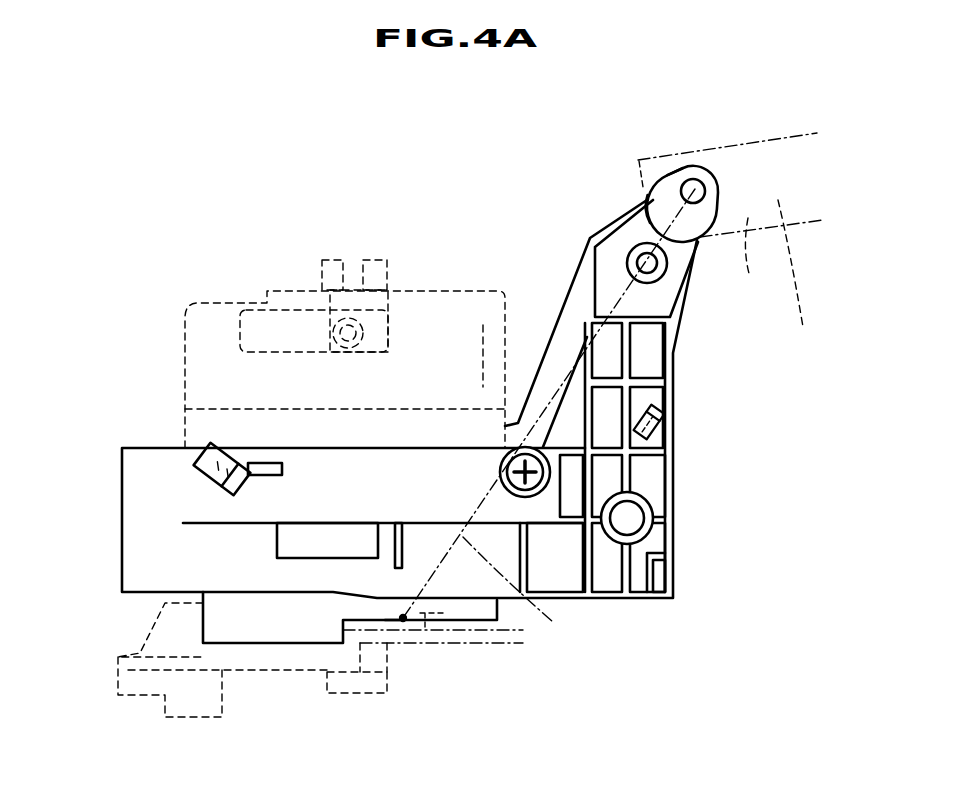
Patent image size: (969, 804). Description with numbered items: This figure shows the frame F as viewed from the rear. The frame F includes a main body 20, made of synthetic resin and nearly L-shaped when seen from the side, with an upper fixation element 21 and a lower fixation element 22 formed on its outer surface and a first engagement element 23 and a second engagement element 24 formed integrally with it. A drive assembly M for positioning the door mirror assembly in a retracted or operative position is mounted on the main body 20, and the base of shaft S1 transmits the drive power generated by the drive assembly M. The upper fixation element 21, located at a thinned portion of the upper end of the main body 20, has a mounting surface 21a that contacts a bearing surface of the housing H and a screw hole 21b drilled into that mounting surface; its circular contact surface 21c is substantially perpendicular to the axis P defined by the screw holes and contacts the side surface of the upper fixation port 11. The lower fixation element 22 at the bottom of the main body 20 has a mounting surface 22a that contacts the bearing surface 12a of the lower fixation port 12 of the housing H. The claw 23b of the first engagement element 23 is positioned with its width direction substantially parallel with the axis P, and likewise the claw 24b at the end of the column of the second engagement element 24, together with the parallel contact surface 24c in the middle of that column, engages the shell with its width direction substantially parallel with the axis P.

The upper fixation port 11 is at (753, 263).
The lower fixation port 12 is at (403, 625).
The bearing surface 12a is at (425, 613).
The main body 20 is at (677, 546).
The upper fixation element 21 is at (677, 170).
The mounting surface 21a is at (668, 193).
The screw hole 21b is at (710, 175).
The contact surface 21c is at (652, 187).
The lower fixation element 22 is at (405, 628).
The mounting surface 22a is at (388, 625).
The first engagement element 23 is at (658, 435).
The claw 23b is at (662, 412).
The second engagement element 24 is at (200, 477).
The claw 24b is at (205, 450).
The contact surface 24c is at (242, 482).
The frame F is at (548, 287).
The drive assembly M is at (212, 313).
The axis P is at (549, 414).
The housing H is at (504, 656).
The base of shaft S1 is at (260, 658).